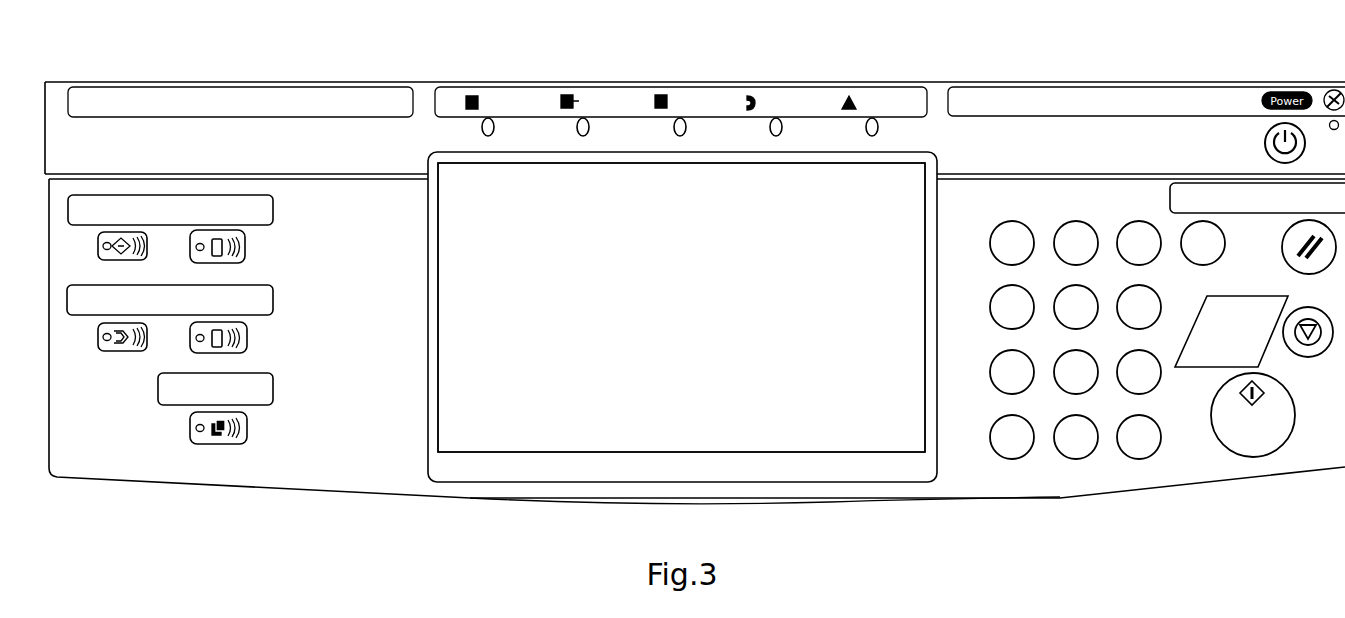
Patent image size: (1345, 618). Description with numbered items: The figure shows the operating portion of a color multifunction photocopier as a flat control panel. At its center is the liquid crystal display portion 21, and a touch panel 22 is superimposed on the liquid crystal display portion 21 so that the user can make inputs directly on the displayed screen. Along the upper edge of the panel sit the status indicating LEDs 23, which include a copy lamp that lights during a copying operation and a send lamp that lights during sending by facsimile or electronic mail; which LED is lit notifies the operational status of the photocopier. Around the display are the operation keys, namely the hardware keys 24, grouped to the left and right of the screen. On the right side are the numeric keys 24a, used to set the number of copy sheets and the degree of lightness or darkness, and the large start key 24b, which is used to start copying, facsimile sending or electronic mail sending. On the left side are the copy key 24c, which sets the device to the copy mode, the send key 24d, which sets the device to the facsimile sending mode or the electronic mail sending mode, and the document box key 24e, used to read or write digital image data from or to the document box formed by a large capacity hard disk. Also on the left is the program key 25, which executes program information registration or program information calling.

The liquid crystal display portion 21 is at (518, 454).
The touch panel 22 is at (681, 307).
The status indicating LEDs 23 is at (443, 75).
The hardware keys 24 is at (702, 371).
The numeric keys 24a is at (1063, 465).
The start key 24b is at (1253, 445).
The copy key 24c is at (246, 247).
The send key 24d is at (248, 339).
The document box key 24e is at (248, 430).
The program key 25 is at (97, 336).